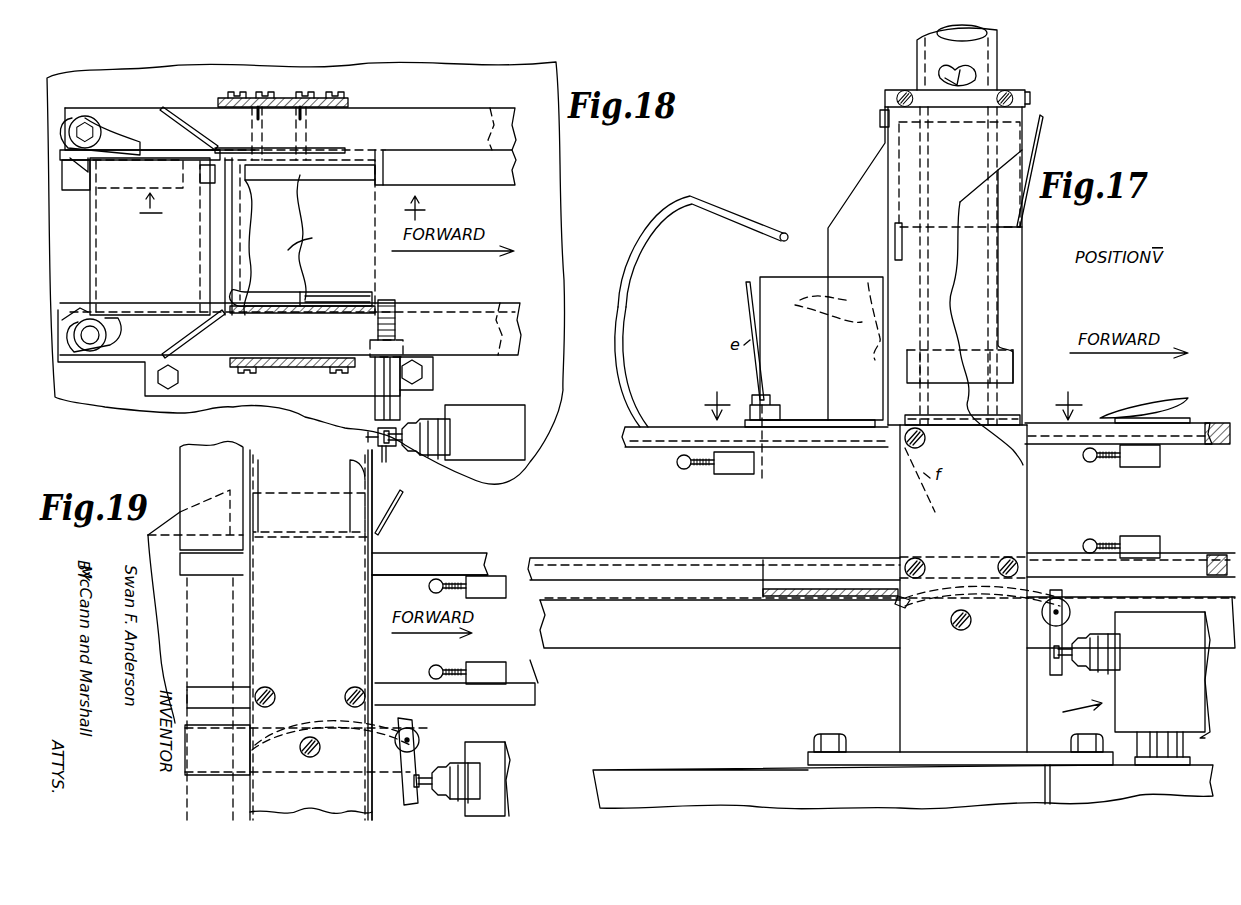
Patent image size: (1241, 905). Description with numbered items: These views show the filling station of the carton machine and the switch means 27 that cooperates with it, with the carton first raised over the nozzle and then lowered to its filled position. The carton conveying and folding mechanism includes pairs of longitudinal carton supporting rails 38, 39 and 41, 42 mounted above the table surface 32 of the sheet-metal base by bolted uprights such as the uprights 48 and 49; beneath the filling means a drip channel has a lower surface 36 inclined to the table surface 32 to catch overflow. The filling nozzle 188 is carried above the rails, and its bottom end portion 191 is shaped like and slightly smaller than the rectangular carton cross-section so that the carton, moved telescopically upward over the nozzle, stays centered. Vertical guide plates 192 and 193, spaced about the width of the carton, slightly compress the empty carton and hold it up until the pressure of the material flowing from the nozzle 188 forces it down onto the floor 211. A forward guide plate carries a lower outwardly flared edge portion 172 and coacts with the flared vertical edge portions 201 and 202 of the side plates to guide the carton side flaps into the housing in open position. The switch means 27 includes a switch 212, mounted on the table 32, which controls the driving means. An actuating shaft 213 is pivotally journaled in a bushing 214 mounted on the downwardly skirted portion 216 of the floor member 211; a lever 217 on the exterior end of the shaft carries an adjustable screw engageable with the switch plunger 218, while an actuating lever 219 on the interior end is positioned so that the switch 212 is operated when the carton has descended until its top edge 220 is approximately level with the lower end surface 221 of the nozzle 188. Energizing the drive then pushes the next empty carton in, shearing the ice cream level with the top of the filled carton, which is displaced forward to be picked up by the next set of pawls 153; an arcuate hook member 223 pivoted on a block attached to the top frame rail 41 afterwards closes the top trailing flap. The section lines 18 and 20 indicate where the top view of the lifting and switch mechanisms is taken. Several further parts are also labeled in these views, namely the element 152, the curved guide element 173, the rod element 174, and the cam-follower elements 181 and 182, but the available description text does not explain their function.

In FIG. 17, the section line 18— 18 is at (893, 396).
In FIG. 18, the section line 20 is at (285, 211).
In FIG. 17, the switch means 27 is at (1071, 710).
In FIG. 17, the top or table surface 32 is at (734, 774).
In FIG. 17, the lower surface of drip channel 36 is at (978, 768).
In FIG. 18, the carton supporting rail 38 is at (498, 310).
In FIG. 17, the carton supporting rail 38 is at (850, 434).
In FIG. 17, the carton supporting rail 39 is at (848, 572).
In FIG. 18, the carton supporting rail 41 is at (457, 112).
In FIG. 19, the carton supporting rail 41 is at (392, 558).
In FIG. 19, the carton supporting rail 42 is at (412, 690).
In FIG. 18, the bolted upright 48 is at (326, 370).
In FIG. 17, the bolted upright 48 is at (905, 710).
In FIG. 18, the bolted upright 49 is at (286, 98).
In FIG. 18, the clamp plate 152 is at (82, 300).
In FIG. 17, the clamp plate 152 is at (742, 462).
In FIG. 19, the pawls 153 is at (490, 668).
In FIG. 17, the pawls 153 is at (1152, 452).
In FIG. 17, the lower outwardly flared edge portion 172 is at (805, 305).
In FIG. 17, the curved guide rod 173 is at (625, 290).
In FIG. 17, the tucker rod 174 is at (786, 233).
In FIG. 18, the lower cam follower 181 is at (112, 335).
In FIG. 18, the upper cam follower 182 is at (140, 140).
In FIG. 18, the filling nozzle 188 is at (293, 236).
In FIG. 17, the filling nozzle 188 is at (982, 292).
In FIG. 17, the bottom end portion of filling nozzle 191 is at (1000, 364).
In FIG. 18, the vertical guide plate 192 is at (330, 313).
In FIG. 18, the vertical guide plate 193 is at (322, 148).
In FIG. 18, the flared vertical edge portion 201 is at (200, 332).
In FIG. 17, the flared vertical edge portion 201 is at (862, 184).
In FIG. 18, the flared vertical edge portion 202 is at (192, 102).
In FIG. 17, the floor 211 is at (704, 598).
In FIG. 18, the switch 212 is at (468, 410).
In FIG. 17, the switch 212 is at (1130, 720).
In FIG. 18, the actuating shaft 213 is at (378, 430).
In FIG. 17, the actuating shaft 213 is at (1068, 606).
In FIG. 18, the bushing 214 is at (392, 398).
In FIG. 17, the downwardly skirted portion 216 is at (872, 632).
In FIG. 17, the lever 217 is at (1064, 632).
In FIG. 17, the switch plunger 218 is at (1072, 668).
In FIG. 18, the actuating lever 219 is at (326, 290).
In FIG. 19, the actuating lever 219 is at (336, 722).
In FIG. 17, the actuating lever 219 is at (982, 575).
In FIG. 19, the top edge of carton 220 is at (288, 530).
In FIG. 19, the lower end surface of nozzle 221 is at (345, 535).
In FIG. 17, the lower end surface of nozzle 221 is at (1012, 392).
In FIG. 17, the arcuate hook member 223 is at (1148, 404).